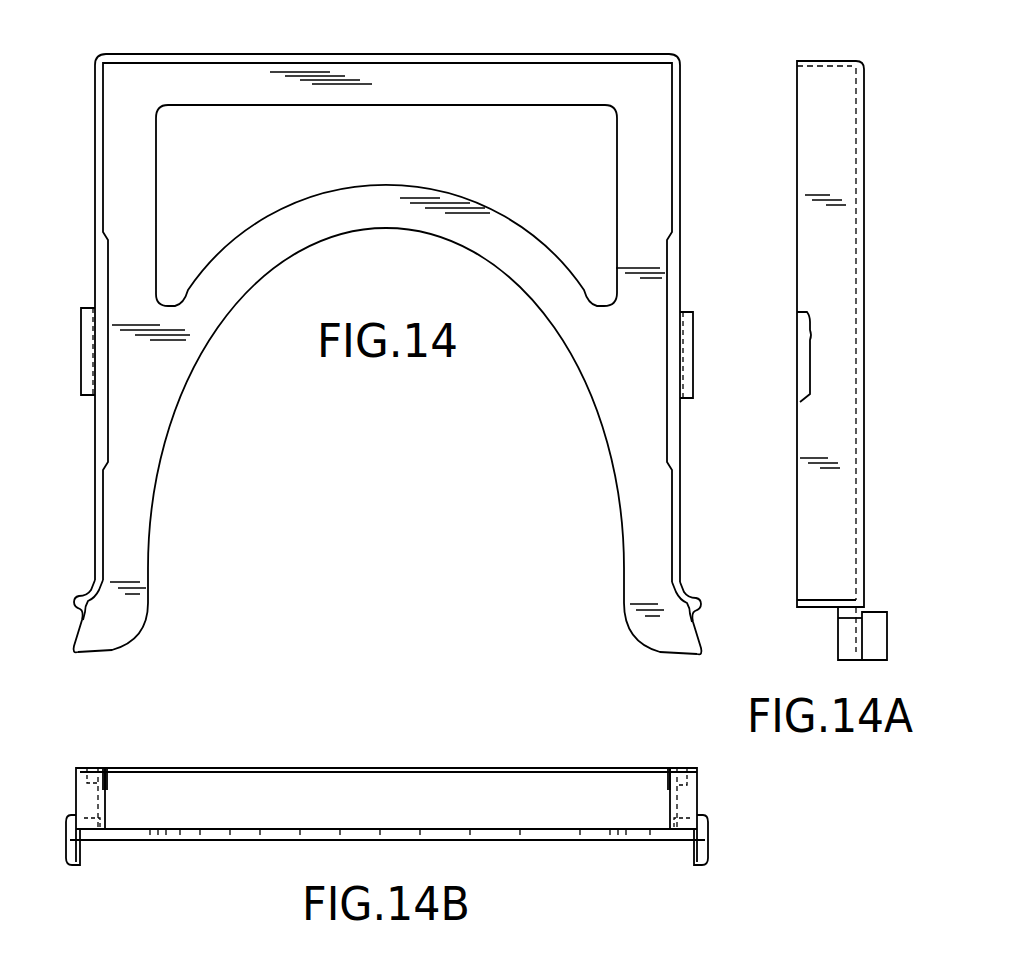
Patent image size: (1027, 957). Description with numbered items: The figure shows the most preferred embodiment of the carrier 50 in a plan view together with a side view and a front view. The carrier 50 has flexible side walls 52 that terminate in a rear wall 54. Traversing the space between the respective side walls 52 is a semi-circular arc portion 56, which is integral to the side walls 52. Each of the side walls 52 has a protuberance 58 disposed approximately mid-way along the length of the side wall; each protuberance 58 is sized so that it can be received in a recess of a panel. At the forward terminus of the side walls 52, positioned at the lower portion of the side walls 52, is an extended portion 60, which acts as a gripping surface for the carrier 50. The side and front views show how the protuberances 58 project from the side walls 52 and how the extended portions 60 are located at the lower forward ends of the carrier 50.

In FIG. 14, the carrier 50 is at (690, 129).
In FIG. 14A, the carrier 50 is at (830, 334).
In FIG. 14B, the carrier 50 is at (387, 804).
In FIG. 14, the flexible side walls 52 is at (147, 562).
In FIG. 14, the rear wall 54 is at (428, 75).
In FIG. 14B, the rear wall 54 is at (98, 826).
In FIG. 14, the semi-circular arc portion 56 is at (393, 190).
In FIG. 14, the protuberance 58 is at (82, 340).
In FIG. 14A, the protuberance 58 is at (800, 362).
In FIG. 14B, the protuberance 58 is at (97, 772).
In FIG. 14, the extended portion 60 is at (72, 622).
In FIG. 14A, the extended portion 60 is at (876, 626).
In FIG. 14B, the extended portion 60 is at (80, 860).